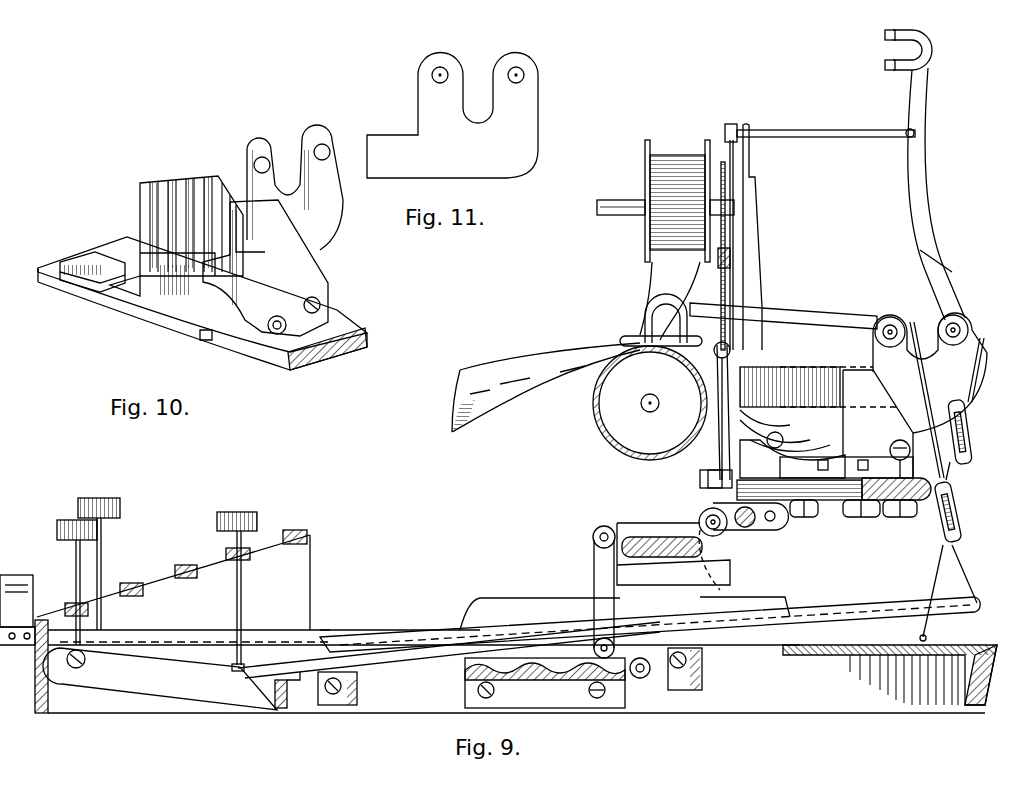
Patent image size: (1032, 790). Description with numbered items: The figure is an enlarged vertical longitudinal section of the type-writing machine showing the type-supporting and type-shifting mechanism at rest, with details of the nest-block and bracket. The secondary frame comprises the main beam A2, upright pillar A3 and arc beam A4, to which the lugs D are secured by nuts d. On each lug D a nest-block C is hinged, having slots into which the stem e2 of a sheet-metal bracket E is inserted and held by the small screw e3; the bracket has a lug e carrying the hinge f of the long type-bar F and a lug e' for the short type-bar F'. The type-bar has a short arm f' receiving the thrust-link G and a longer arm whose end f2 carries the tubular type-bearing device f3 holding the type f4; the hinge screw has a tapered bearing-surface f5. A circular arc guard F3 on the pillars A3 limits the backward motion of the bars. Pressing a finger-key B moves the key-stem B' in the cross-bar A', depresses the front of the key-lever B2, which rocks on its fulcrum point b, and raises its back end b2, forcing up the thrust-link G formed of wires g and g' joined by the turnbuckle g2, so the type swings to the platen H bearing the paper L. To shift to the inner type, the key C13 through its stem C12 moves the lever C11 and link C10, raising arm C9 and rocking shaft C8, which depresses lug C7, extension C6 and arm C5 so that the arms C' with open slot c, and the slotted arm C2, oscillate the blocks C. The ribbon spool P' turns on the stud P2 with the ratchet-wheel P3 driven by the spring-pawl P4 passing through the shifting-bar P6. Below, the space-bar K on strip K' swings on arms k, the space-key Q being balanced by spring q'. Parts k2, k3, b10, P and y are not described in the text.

In FIG. 10, the lug D is at (200, 305).
In FIG. 10, the arc beam A4 is at (335, 352).
In FIG. 9, the arc beam A4 is at (935, 492).
In FIG. 10, the open slot c is at (80, 285).
In FIG. 10, the arm C' is at (175, 247).
In FIG. 9, the arm C' is at (792, 422).
In FIG. 10, the nest-block C is at (265, 268).
In FIG. 9, the nest-block C is at (846, 422).
In FIG. 10, the small screw e3 is at (254, 221).
In FIG. 10, the bracket E is at (295, 187).
In FIG. 11, the bracket E is at (452, 116).
In FIG. 9, the bracket E is at (930, 373).
In FIG. 10, the lug e' is at (281, 144).
In FIG. 11, the lug e' is at (441, 93).
In FIG. 9, the lug e' is at (898, 359).
In FIG. 10, the lug e is at (334, 175).
In FIG. 11, the lug e is at (516, 93).
In FIG. 9, the lug e is at (944, 359).
In FIG. 11, the stem e2 is at (384, 143).
In FIG. 9, the space-key Q is at (351, 630).
In FIG. 9, the fulcrum point b is at (545, 683).
In FIG. 9, the spring q' is at (643, 680).
In FIG. 9, the arm k is at (160, 679).
In FIG. 9, the lever pivot k2 is at (75, 670).
In FIG. 9, the lever rod k3 is at (325, 640).
In FIG. 9, the strip of metal K' is at (284, 706).
In FIG. 9, the space-bar K is at (331, 706).
In FIG. 9, the stem foot b10 is at (236, 672).
In FIG. 9, the cross-bar A' is at (173, 580).
In FIG. 9, the finger-key B is at (144, 515).
In FIG. 9, the key-stem B' is at (163, 598).
In FIG. 9, the shifting-key C13 is at (99, 499).
In FIG. 9, the stem C12 is at (101, 556).
In FIG. 9, the lever C11 is at (160, 630).
In FIG. 9, the key-lever B2 is at (185, 640).
In FIG. 9, the back end of key-lever b2 is at (980, 605).
In FIG. 9, the link C10 is at (605, 584).
In FIG. 9, the bent lever-arm C9 is at (670, 575).
In FIG. 9, the main beam A2 is at (635, 537).
In FIG. 9, the arm C5 is at (772, 522).
In FIG. 9, the extension C6 is at (747, 528).
In FIG. 9, the rock-shaft C8 is at (714, 540).
In FIG. 9, the lug C7 is at (726, 560).
In FIG. 9, the shifting-bar P6 is at (704, 495).
In FIG. 9, the platen H is at (650, 403).
In FIG. 9, the paper L is at (546, 387).
In FIG. 9, the spool P' is at (677, 201).
In FIG. 9, the stud P2 is at (665, 198).
In FIG. 9, the ribbon P is at (670, 301).
In FIG. 9, the ratchet-wheel P3 is at (726, 172).
In FIG. 9, the spring-pawl P4 is at (730, 258).
In FIG. 9, the upright pillar A3 is at (766, 237).
In FIG. 9, the circular arc guard F3 is at (820, 126).
In FIG. 9, the type-bar F is at (936, 194).
In FIG. 9, the arm part y is at (940, 320).
In FIG. 9, the type-bearing device f3 is at (934, 45).
In FIG. 9, the end of type-bar f2 is at (930, 70).
In FIG. 9, the type f4 is at (884, 35).
In FIG. 9, the tapered bearing-surface f5 is at (660, 350).
In FIG. 9, the hinge f is at (799, 318).
In FIG. 9, the short arm f' is at (949, 317).
In FIG. 9, the short type-bar F' is at (783, 307).
In FIG. 9, the arm C2 is at (722, 435).
In FIG. 9, the nut d is at (853, 520).
In FIG. 9, the wire g is at (951, 426).
In FIG. 9, the wire g' is at (963, 489).
In FIG. 9, the thrust-link G is at (973, 548).
In FIG. 9, the turnbuckle g2 is at (968, 456).